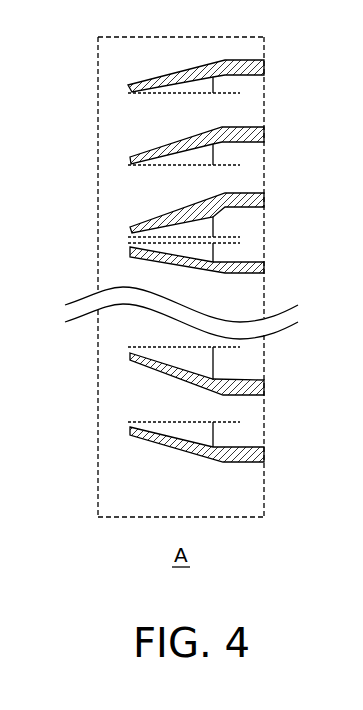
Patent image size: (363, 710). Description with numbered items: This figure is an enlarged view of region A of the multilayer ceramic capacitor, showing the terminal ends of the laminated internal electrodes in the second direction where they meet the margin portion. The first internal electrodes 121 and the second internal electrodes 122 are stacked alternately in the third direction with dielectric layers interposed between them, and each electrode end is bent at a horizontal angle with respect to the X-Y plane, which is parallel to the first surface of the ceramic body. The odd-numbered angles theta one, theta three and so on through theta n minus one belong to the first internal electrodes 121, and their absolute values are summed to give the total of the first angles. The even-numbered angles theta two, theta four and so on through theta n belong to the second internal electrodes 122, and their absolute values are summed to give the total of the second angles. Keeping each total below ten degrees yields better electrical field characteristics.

The first internal electrode 121 is at (152, 79).
The second internal electrode 122 is at (156, 149).